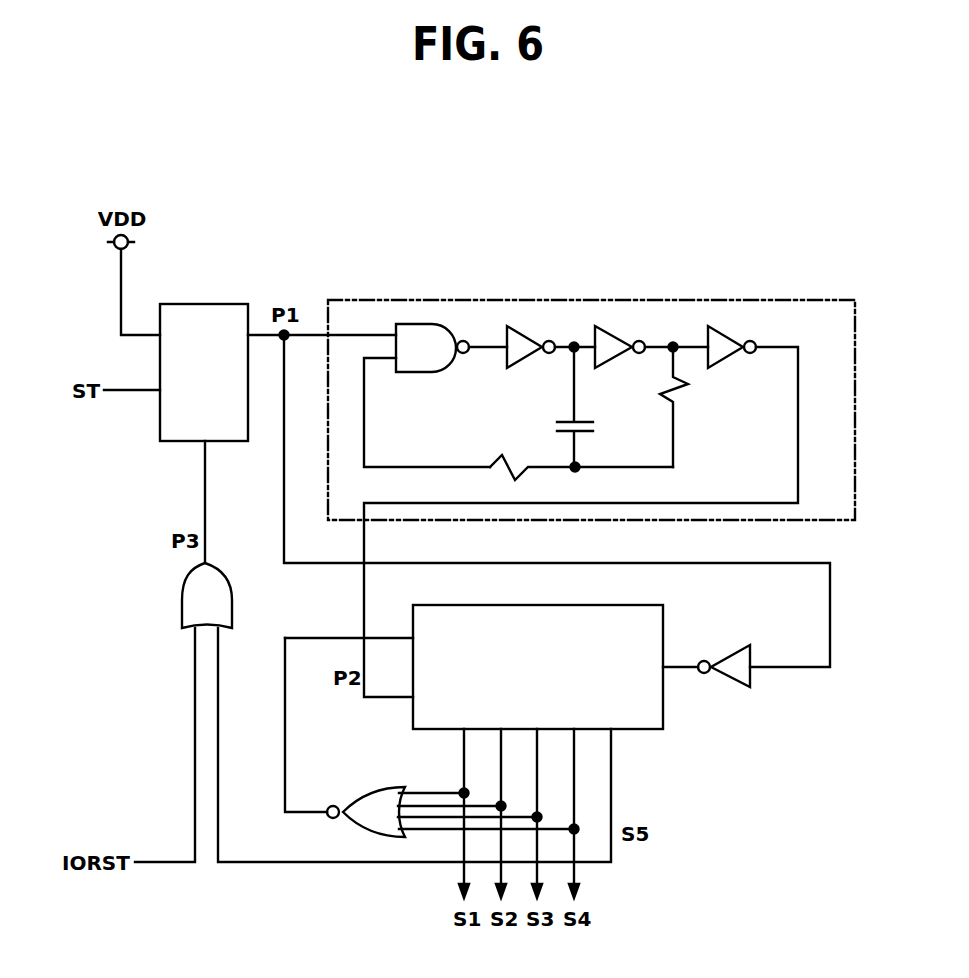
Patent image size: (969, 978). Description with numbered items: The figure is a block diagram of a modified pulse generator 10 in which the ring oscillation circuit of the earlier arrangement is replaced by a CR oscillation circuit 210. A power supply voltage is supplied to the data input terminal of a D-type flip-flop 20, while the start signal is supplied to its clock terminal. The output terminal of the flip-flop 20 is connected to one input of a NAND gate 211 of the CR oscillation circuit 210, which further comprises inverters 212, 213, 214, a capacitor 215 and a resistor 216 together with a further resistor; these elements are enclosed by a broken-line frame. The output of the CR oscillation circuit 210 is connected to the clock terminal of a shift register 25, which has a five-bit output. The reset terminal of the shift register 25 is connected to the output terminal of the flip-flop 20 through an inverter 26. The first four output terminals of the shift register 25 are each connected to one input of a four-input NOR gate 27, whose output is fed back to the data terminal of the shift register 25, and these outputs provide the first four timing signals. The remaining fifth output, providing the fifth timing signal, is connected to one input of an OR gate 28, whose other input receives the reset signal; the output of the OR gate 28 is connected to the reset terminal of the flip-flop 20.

The pulse generator 10 is at (637, 218).
The D-type flip-flop 20 is at (203, 304).
The CR oscillation circuit 210 is at (776, 300).
The NAND gate 211 is at (420, 324).
The inverter 212 is at (522, 326).
The inverter 213 is at (612, 326).
The inverter 214 is at (724, 326).
The capacitor 215 is at (586, 418).
The resistor 216 is at (491, 460).
The shift register 25 is at (538, 605).
The inverter 26 is at (726, 645).
The 4-input NOR gate 27 is at (360, 787).
The OR gate 28 is at (182, 608).